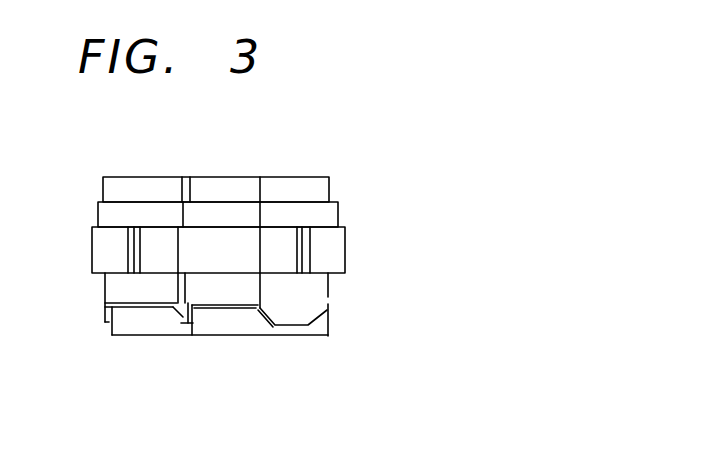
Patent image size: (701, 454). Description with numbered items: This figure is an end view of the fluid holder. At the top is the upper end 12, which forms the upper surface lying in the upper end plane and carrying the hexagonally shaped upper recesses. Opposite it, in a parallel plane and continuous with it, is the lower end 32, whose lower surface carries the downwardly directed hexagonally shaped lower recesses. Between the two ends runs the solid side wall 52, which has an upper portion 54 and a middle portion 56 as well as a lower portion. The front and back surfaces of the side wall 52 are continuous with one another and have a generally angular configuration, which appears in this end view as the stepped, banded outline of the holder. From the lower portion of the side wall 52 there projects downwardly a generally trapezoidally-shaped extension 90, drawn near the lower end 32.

The upper end 12 is at (308, 176).
The upper portion 54 is at (344, 211).
The side wall 52 is at (349, 252).
The middle portion 56 is at (330, 293).
The extension 90 is at (295, 313).
The lower end 32 is at (145, 337).